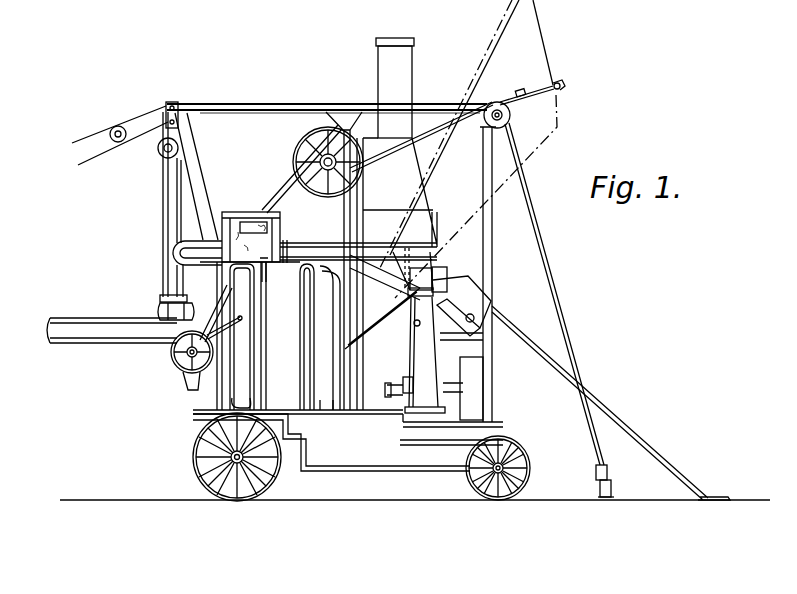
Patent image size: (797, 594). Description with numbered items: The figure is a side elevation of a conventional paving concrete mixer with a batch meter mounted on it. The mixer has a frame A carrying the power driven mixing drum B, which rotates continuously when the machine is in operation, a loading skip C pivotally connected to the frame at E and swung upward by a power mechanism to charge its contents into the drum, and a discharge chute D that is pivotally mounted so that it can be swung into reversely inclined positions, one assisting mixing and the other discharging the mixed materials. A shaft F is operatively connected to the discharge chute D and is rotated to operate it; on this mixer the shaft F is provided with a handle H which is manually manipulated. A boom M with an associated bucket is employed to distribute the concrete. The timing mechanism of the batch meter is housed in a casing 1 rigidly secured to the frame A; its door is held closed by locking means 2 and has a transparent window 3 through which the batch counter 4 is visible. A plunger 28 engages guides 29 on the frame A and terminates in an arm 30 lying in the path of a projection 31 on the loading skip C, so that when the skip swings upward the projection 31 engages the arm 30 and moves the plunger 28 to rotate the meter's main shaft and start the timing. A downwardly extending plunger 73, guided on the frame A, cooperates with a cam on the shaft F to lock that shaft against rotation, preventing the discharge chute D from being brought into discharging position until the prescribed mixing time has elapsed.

The frame A is at (326, 105).
The mixing drum B is at (287, 378).
The loading skip C is at (610, 407).
The discharge chute D is at (186, 376).
The pivot of loading skip E is at (414, 324).
The shaft F is at (164, 302).
The handle H is at (242, 322).
The boom M is at (86, 318).
The casing 1 is at (228, 212).
The locking means 2 is at (268, 274).
The transparent window 3 is at (248, 221).
The batch counter 4 is at (260, 222).
The plunger 28 is at (307, 242).
The guides 29 is at (360, 238).
The arm 30 is at (434, 268).
The projection 31 is at (490, 310).
The plunger 73 is at (180, 277).